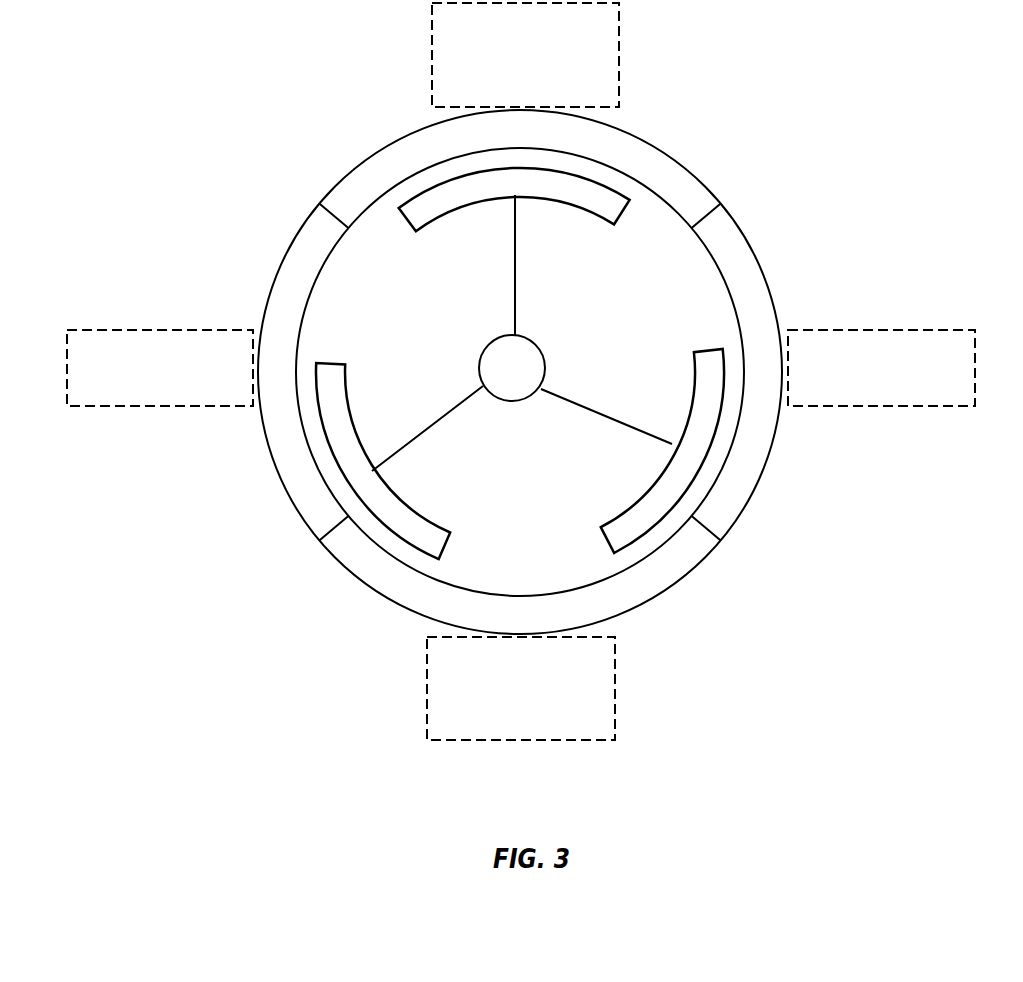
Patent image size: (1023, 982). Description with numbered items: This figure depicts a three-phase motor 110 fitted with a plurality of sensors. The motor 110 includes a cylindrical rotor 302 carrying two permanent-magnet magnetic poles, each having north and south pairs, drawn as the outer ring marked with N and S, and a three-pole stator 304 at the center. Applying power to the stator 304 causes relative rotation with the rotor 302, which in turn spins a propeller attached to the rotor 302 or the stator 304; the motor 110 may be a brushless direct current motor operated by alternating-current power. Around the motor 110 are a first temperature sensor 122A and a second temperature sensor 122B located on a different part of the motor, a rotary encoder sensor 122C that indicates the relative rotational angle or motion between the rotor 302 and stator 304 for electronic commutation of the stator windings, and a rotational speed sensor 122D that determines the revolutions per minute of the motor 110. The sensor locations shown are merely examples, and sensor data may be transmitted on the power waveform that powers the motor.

The three-phase motor 110 is at (318, 136).
The cylindrical rotor 302 is at (757, 252).
The three-pole stator 304 is at (514, 352).
The first temperature sensor 122A is at (242, 393).
The second temperature sensor 122B is at (962, 393).
The rotary encoder sensor 122C is at (595, 96).
The rotational speed sensor 122D is at (545, 729).